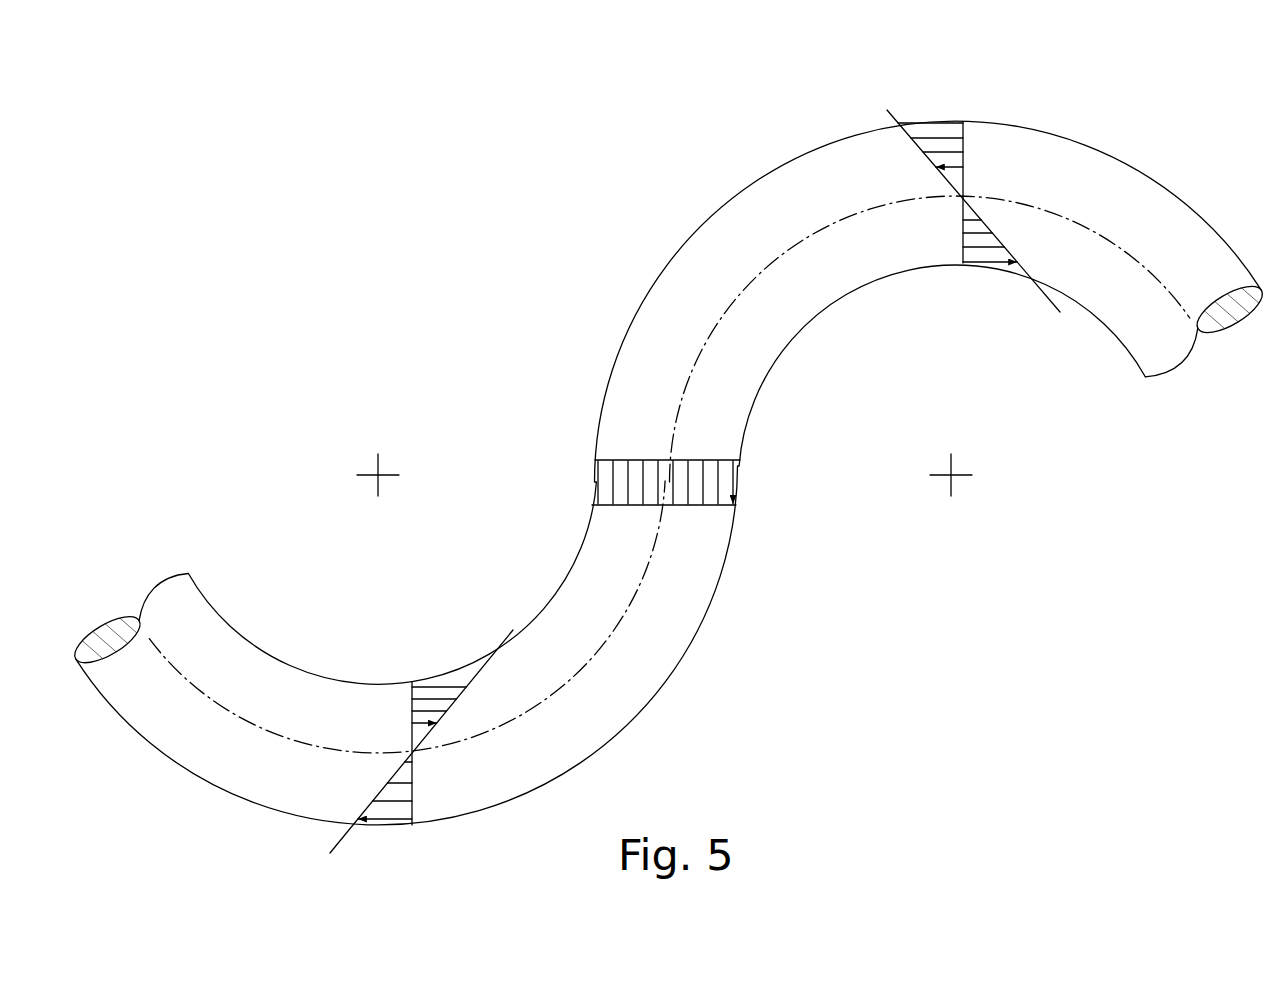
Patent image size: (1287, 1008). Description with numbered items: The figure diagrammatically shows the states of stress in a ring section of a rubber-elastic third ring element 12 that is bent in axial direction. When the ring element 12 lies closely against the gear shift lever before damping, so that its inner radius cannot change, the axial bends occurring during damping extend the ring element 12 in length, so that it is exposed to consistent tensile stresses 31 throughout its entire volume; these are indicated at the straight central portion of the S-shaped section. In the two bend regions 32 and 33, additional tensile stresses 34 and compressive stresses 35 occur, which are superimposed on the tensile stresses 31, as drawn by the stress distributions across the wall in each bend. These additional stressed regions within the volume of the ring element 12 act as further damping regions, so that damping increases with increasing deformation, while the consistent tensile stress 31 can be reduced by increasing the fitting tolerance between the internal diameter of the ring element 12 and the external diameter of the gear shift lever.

The rubber-elastic third ring element 12 is at (690, 211).
The tensile stresses 31 is at (738, 485).
The bend region 32 is at (461, 626).
The bend region 33 is at (898, 315).
The tensile stresses 34 is at (398, 812).
The compressive stresses 35 is at (445, 678).